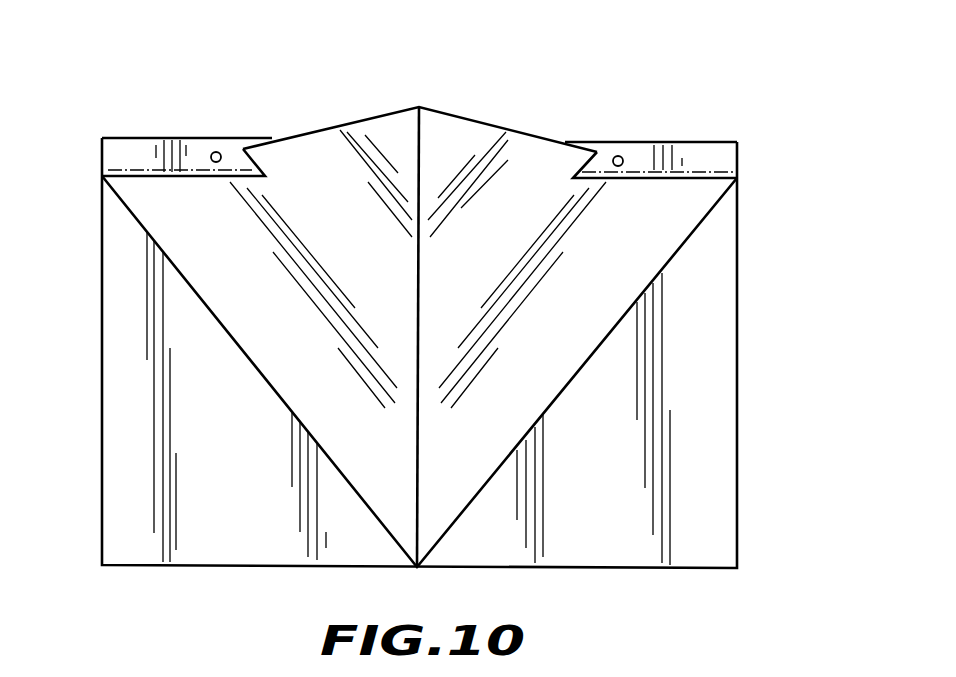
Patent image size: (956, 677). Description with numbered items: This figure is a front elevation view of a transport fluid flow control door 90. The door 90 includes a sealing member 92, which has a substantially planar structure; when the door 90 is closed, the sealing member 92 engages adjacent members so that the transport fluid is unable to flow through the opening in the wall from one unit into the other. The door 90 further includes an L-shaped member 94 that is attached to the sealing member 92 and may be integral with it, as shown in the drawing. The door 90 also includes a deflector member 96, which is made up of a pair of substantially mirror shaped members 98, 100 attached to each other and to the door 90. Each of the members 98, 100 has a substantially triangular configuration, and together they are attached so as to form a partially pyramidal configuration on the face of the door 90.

The door 90 is at (150, 100).
The sealing member 92 is at (102, 503).
The L-shaped member 94 is at (752, 152).
The deflector member 96 is at (378, 100).
The mirror shaped member 98 is at (318, 152).
The mirror shaped member 100 is at (525, 150).